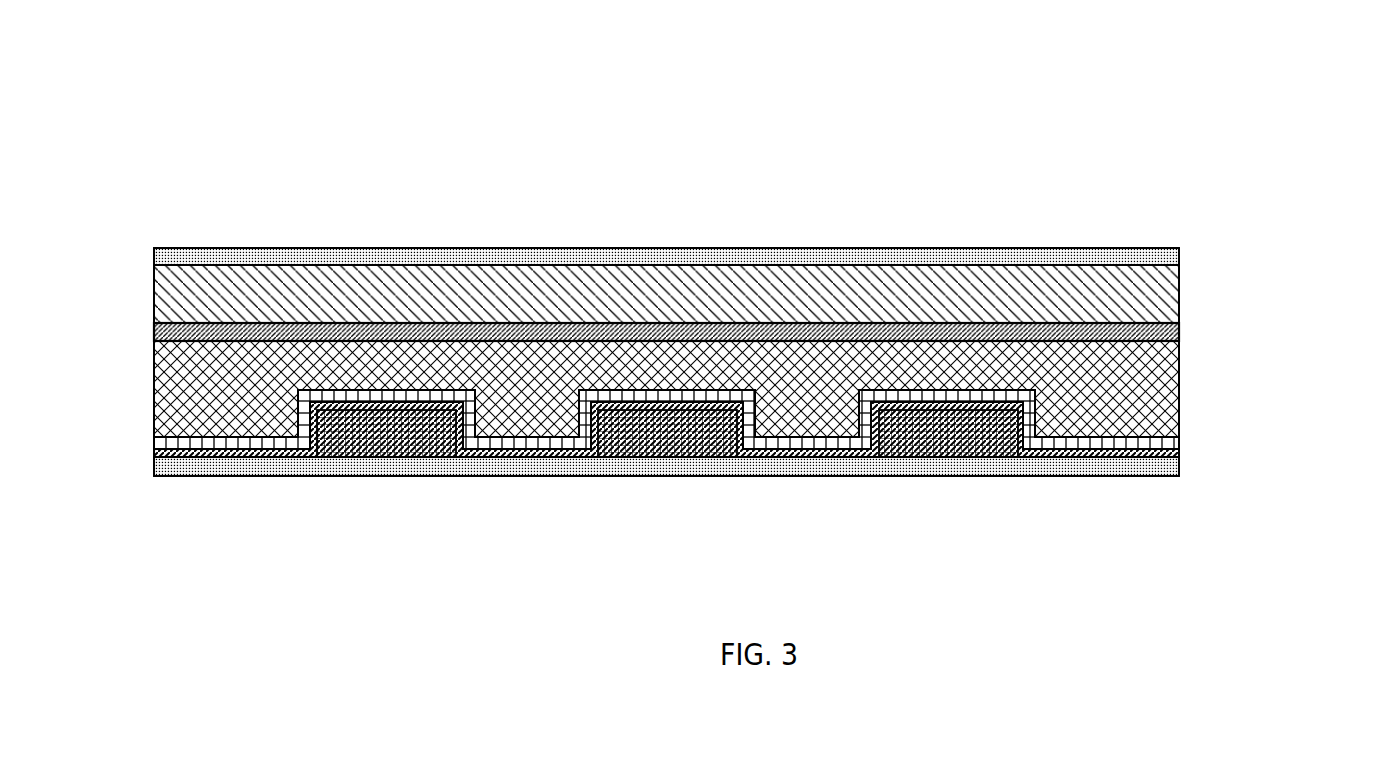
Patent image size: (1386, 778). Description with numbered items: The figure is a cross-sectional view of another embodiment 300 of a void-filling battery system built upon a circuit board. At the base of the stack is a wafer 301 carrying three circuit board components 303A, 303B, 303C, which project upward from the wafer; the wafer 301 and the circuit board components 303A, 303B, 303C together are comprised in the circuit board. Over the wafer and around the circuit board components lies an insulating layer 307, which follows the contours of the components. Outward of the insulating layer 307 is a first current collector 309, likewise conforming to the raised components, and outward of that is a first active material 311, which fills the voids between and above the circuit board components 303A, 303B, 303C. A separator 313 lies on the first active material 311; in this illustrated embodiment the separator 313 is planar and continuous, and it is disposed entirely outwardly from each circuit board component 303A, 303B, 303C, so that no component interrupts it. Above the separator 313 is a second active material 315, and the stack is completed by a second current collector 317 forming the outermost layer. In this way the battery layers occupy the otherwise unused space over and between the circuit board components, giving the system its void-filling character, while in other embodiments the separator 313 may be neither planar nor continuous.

The void-filling battery system embodiment 300 is at (1190, 115).
The wafer 301 is at (1143, 457).
The circuit board component 303A is at (377, 423).
The circuit board component 303B is at (658, 423).
The circuit board component 303C is at (939, 423).
The insulating layer 307 is at (1160, 448).
The first current collector 309 is at (1160, 433).
The first active material 311 is at (220, 383).
The separator 313 is at (372, 325).
The second active material 315 is at (715, 293).
The second current collector 317 is at (1173, 248).